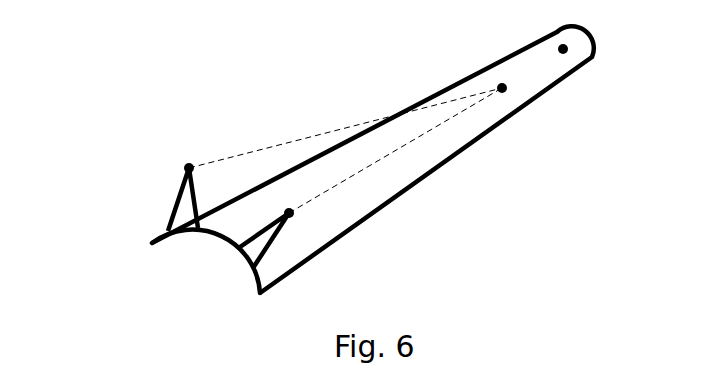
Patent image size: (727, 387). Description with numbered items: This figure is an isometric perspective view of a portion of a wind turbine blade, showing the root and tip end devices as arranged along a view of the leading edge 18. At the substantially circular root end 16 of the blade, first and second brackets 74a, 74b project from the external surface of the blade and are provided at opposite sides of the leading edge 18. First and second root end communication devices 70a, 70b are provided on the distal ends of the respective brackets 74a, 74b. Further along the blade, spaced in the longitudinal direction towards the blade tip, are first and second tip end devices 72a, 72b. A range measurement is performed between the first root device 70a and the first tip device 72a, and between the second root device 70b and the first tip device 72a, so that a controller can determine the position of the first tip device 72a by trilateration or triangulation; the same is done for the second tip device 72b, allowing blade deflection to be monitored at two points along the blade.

The root end 16 is at (217, 243).
The leading edge 18 is at (470, 68).
The first root end communication device 70a is at (187, 165).
The second root end communication device 70b is at (292, 214).
The first tip end device 72a is at (505, 90).
The second tip end device 72b is at (566, 51).
The first bracket 74a is at (177, 213).
The second bracket 74b is at (266, 246).